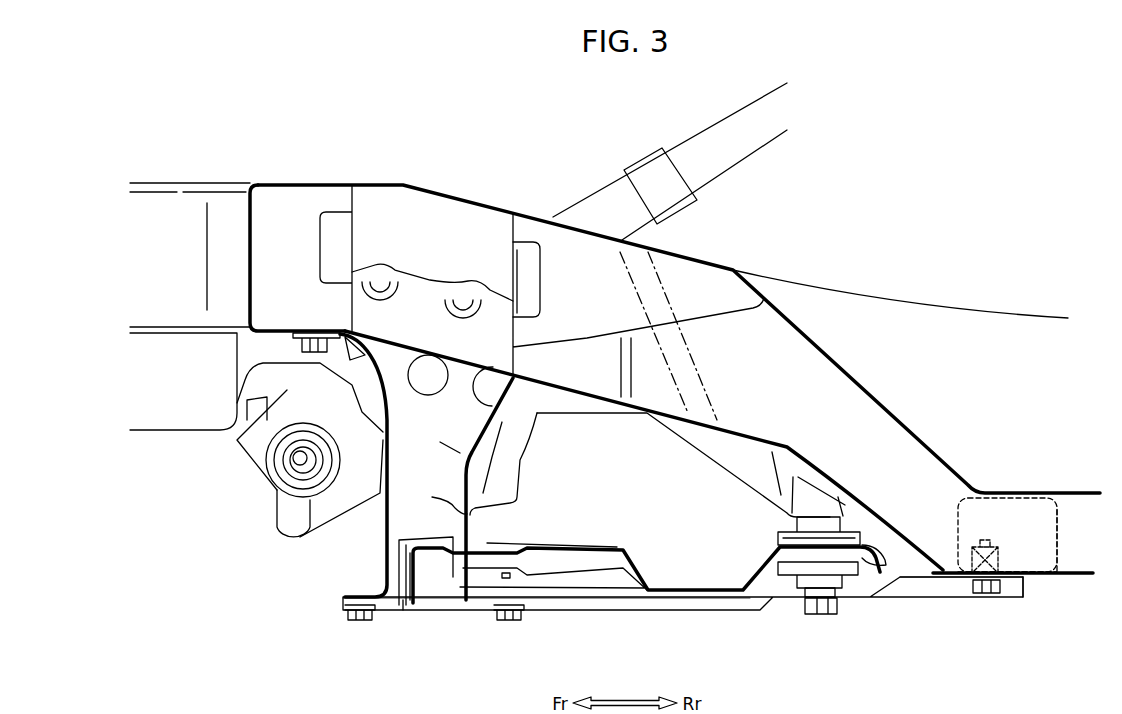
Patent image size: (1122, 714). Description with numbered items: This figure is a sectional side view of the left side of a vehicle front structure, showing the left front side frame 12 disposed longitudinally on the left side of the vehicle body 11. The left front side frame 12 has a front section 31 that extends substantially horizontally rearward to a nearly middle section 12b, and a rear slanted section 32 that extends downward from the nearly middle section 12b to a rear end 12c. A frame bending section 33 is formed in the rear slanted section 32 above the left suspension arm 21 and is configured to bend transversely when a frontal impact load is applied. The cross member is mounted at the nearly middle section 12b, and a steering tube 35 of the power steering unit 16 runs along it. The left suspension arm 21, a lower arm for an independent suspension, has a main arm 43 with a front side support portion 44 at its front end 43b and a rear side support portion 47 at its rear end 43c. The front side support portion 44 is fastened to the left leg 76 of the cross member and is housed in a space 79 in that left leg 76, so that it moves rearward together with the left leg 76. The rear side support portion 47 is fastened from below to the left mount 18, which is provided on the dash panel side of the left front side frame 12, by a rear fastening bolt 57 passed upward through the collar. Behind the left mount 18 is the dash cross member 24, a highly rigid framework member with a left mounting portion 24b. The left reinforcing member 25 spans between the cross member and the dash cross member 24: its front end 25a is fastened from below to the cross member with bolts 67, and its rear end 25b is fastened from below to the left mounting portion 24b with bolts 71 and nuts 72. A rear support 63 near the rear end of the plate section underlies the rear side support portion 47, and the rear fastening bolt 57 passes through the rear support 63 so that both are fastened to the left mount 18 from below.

The vehicle body 11 is at (601, 180).
The left front side frame 12 is at (487, 198).
The nearly middle section 12b is at (403, 207).
The rear end 12c is at (1017, 530).
The power steering unit 16 is at (258, 480).
The left mount 18 is at (747, 473).
The left suspension arm 21 is at (687, 549).
The dash cross member 24 is at (1057, 510).
The left mounting portion 24b is at (1032, 577).
The left reinforcing member 25 is at (634, 628).
The front end 25a is at (428, 607).
The rear end 25b is at (950, 593).
The front section 31 is at (228, 203).
The rear slanted section 32 is at (720, 290).
The frame bending section 33 is at (690, 340).
The steering tube 35 is at (363, 435).
The main arm 43 is at (642, 558).
The front end 43b is at (410, 568).
The rear end 43c is at (873, 553).
The front side support portion 44 is at (407, 553).
The rear side support portion 47 is at (850, 540).
The rear fastening bolt 57 is at (820, 607).
The rear support 63 is at (853, 597).
The bolts 67 is at (360, 620).
The bolts 71 is at (983, 593).
The nuts 72 is at (1000, 562).
The left leg 76 is at (478, 457).
The space 79 is at (468, 523).